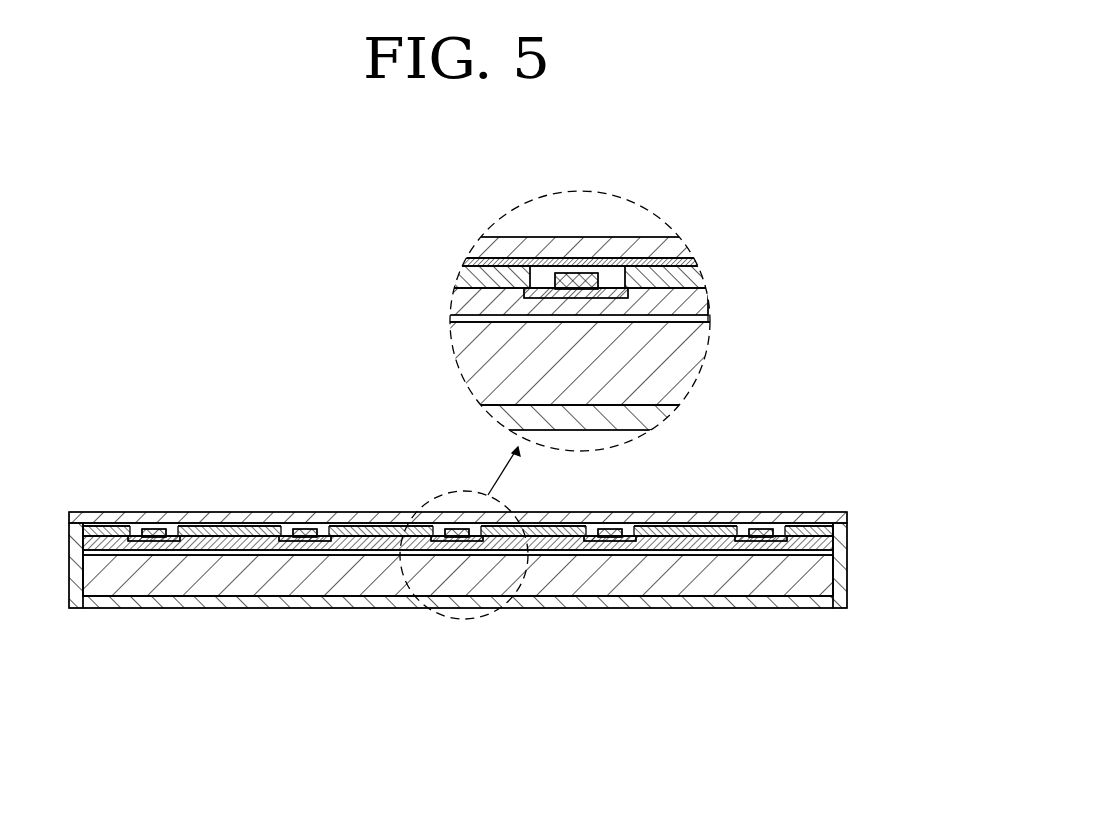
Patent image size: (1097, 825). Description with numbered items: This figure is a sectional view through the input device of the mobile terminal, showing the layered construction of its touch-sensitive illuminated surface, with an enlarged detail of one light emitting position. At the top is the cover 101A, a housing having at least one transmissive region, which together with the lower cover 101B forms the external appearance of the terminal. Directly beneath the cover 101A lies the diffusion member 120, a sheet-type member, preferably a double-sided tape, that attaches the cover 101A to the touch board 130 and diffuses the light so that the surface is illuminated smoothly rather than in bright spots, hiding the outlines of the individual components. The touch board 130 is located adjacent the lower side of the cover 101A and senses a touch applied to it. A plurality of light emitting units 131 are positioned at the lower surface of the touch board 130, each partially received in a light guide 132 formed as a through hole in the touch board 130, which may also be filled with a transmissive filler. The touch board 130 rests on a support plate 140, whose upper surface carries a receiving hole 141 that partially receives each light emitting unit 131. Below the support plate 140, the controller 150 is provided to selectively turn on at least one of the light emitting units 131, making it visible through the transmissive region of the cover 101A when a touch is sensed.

The cover 101A is at (660, 228).
The lower cover 101B is at (848, 583).
The diffusion member 120 is at (692, 261).
The touch board 130 is at (694, 275).
The light emitting unit 131 is at (530, 280).
The light guide 132 is at (612, 258).
The support plate 140 is at (704, 304).
The receiving hole 141 is at (527, 320).
The controller 150 is at (675, 587).